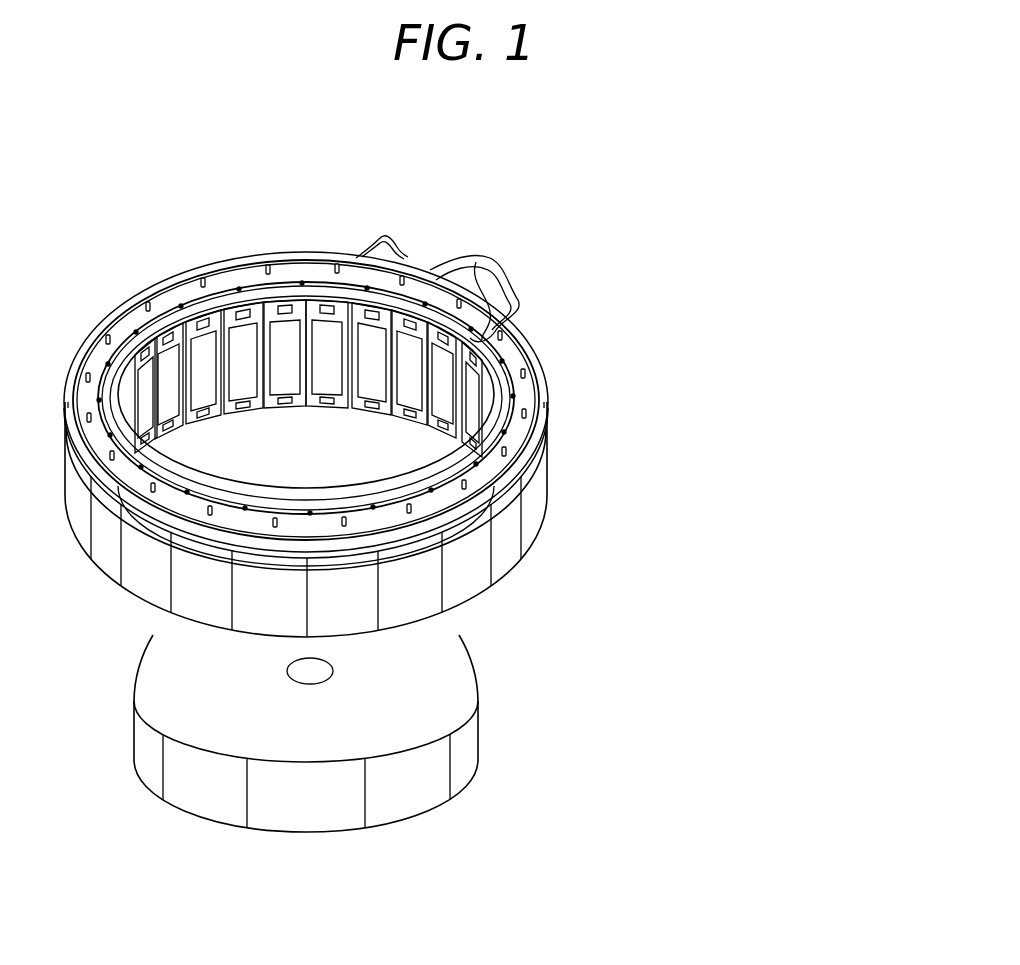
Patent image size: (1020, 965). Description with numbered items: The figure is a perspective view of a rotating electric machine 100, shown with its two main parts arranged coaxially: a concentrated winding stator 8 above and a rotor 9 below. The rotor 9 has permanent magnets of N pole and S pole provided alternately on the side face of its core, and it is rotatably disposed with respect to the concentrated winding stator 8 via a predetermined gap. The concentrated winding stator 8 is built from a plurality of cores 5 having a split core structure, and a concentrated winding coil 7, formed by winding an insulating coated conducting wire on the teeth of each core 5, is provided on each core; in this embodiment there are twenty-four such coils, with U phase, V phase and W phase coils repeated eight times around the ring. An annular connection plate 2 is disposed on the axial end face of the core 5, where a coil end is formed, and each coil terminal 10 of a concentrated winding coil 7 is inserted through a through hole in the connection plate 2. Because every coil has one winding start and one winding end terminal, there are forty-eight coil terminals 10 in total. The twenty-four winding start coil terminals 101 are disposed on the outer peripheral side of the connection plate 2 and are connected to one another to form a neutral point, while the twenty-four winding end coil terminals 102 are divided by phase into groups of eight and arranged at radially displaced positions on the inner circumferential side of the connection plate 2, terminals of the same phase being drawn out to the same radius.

The rotating electric machine 100 is at (303, 213).
The concentrated winding stator 8 is at (123, 291).
The connection plate 2 is at (518, 402).
The coil terminal 10 is at (396, 223).
The winding start coil terminal 101 is at (444, 274).
The winding end coil terminal 102 is at (512, 338).
The concentrated winding coil 7 is at (458, 586).
The core 5 is at (470, 592).
The rotor 9 is at (492, 769).